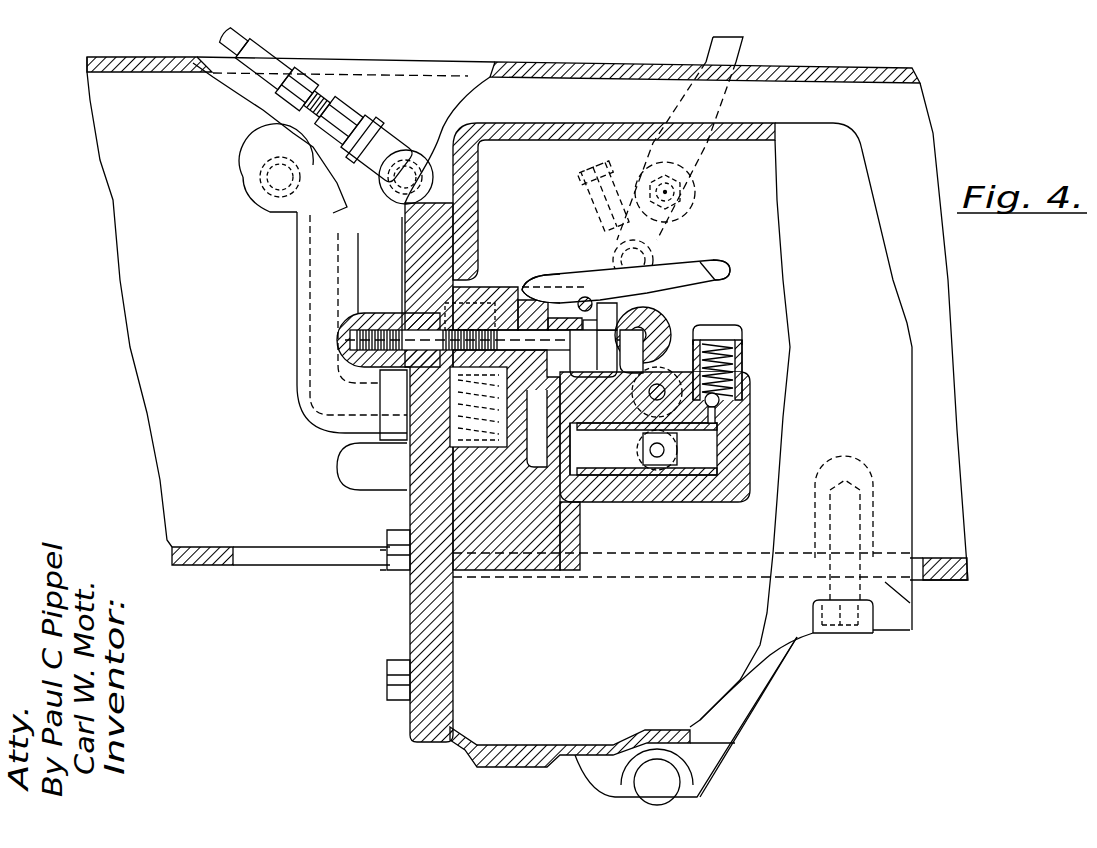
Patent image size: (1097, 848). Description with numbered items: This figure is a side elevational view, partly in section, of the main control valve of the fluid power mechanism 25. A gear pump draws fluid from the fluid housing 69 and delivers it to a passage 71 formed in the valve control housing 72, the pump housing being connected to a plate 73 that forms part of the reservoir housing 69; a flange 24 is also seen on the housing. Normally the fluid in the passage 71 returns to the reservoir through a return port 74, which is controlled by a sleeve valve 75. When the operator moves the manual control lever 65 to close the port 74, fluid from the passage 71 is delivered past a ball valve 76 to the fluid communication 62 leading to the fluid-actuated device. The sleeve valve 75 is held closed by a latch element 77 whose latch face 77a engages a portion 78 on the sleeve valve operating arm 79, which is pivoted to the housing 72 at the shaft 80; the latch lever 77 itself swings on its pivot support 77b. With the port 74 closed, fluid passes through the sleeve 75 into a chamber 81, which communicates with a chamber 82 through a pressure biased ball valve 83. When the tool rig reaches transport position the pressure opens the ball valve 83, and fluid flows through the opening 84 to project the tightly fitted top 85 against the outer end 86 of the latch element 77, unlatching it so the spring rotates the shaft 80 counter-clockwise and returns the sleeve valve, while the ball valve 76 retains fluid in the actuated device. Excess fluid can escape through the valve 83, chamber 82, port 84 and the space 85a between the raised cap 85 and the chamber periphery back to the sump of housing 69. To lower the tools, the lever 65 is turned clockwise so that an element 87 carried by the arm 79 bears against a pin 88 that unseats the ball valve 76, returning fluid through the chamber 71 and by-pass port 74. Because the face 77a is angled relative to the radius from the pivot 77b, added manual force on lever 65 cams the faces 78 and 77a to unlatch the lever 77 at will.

The flange 24 is at (220, 568).
The fluid power mechanism 25 is at (764, 712).
The fluid communication 62 is at (280, 57).
The manual control lever 65 is at (735, 53).
The fluid housing 69 is at (763, 665).
The passage 71 is at (513, 290).
The valve control housing 72 is at (752, 408).
The plate 73 is at (452, 643).
The return port 74 is at (598, 478).
The sleeve valve 75 is at (693, 480).
The ball valve 76 is at (497, 288).
The latch element 77 is at (662, 273).
The latch face 77a is at (722, 278).
The pivot support 77b is at (535, 290).
The portion 78 is at (660, 313).
The sleeve valve operating arm 79 is at (652, 328).
The shaft 80 is at (648, 375).
The chamber 81 is at (752, 447).
The chamber 82 is at (737, 363).
The pressure biased ball valve 83 is at (742, 390).
The opening 84 is at (730, 328).
The top 85 is at (737, 340).
The space 85a is at (743, 347).
The outer end 86 is at (713, 263).
The element 87 is at (612, 300).
The pin 88 is at (585, 298).